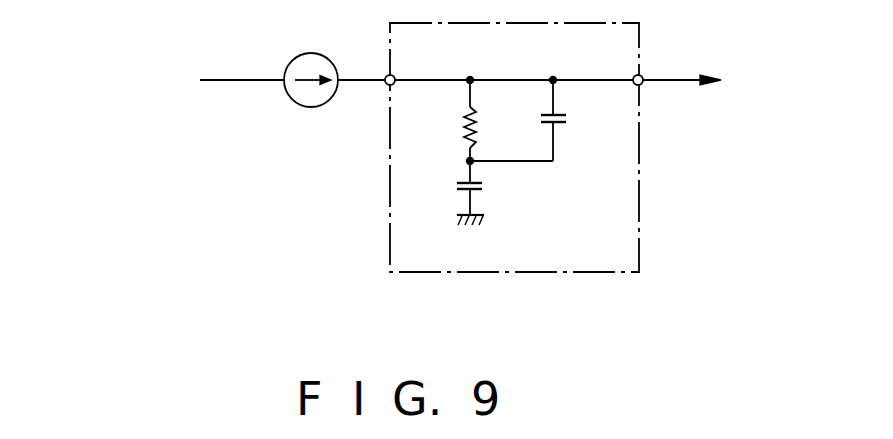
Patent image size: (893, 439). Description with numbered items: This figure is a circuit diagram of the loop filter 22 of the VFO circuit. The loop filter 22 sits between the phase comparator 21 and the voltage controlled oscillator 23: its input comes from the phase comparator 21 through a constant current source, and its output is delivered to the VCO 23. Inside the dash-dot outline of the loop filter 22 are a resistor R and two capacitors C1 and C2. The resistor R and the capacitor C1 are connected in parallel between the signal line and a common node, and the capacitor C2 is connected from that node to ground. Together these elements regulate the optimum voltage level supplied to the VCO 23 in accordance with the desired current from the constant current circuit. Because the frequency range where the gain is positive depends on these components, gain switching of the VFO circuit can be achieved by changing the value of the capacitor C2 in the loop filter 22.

The phase comparator 21 is at (202, 81).
The loop filter 22 is at (613, 274).
The voltage controlled oscillator 23 is at (756, 77).
The resistor R is at (462, 125).
The capacitor C1 is at (567, 120).
The capacitor C2 is at (483, 188).